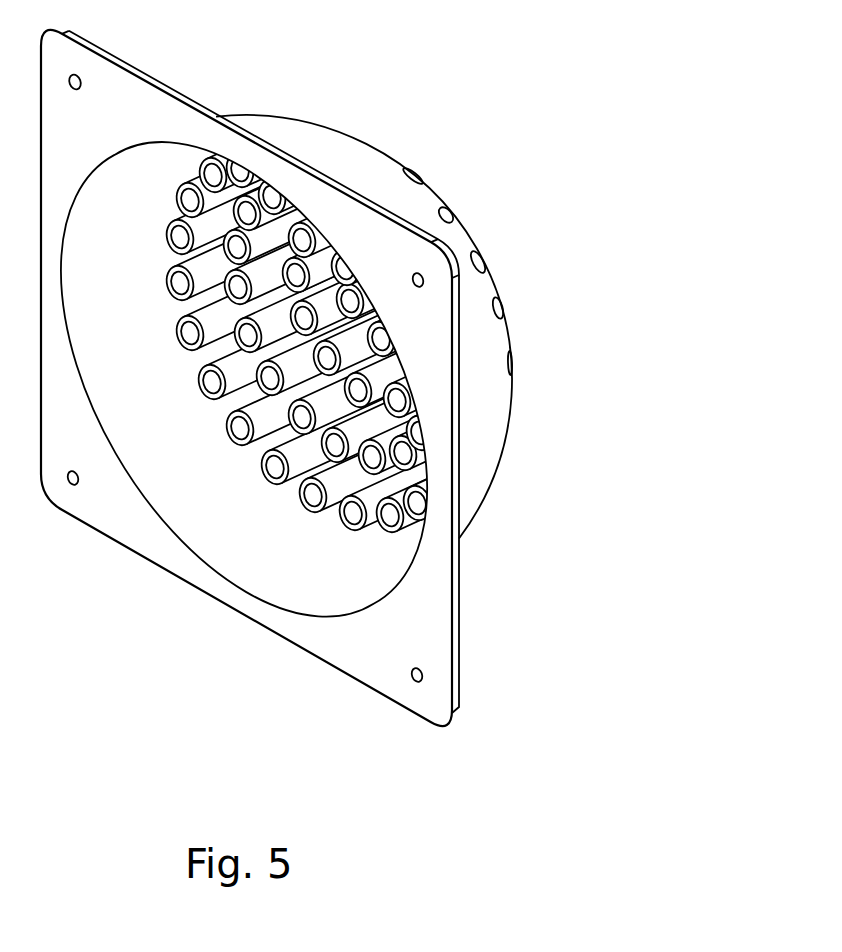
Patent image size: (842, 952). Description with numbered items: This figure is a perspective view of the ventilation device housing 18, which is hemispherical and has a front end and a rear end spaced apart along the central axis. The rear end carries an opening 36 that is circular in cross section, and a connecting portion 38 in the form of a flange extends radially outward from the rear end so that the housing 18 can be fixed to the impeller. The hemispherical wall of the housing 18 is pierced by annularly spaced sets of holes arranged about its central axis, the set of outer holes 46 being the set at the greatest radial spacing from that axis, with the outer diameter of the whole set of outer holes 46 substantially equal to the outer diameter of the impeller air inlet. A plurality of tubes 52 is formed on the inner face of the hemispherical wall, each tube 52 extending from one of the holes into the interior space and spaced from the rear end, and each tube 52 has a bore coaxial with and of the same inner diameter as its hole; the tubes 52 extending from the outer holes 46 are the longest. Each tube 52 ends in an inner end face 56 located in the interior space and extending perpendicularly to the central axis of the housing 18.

The housing 18 is at (305, 143).
The opening 36 is at (221, 560).
The connecting portion 38 is at (299, 378).
The outer holes 46 is at (447, 216).
The tubes 52 is at (394, 384).
The inner end face 56 is at (314, 518).